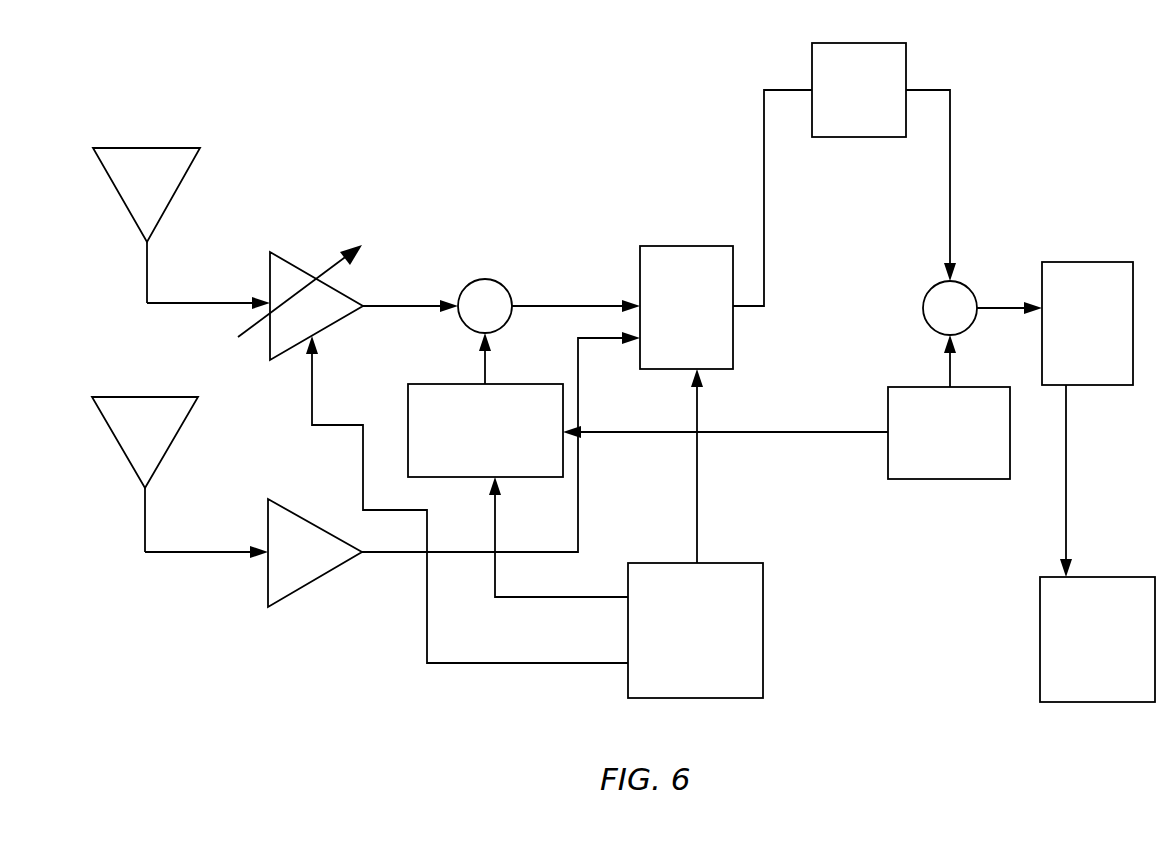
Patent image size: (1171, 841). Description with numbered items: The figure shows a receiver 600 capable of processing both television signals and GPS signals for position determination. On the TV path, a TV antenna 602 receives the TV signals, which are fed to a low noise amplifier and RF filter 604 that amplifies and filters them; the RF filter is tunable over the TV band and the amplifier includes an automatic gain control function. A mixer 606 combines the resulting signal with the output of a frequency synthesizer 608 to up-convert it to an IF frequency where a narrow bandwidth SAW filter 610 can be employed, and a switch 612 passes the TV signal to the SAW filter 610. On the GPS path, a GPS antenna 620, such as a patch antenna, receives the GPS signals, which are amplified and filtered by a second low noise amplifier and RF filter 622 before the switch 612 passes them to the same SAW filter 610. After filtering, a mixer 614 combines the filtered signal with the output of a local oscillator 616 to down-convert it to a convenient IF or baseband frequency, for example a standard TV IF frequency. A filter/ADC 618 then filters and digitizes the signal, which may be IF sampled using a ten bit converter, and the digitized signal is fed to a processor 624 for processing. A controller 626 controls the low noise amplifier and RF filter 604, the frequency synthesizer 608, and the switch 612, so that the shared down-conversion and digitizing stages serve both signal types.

The receiver 600 is at (596, 46).
The TV antenna 602 is at (117, 190).
The low noise amplifier and RF filter 604 is at (268, 272).
The mixer 606 is at (488, 280).
The frequency synthesizer 608 is at (408, 394).
The SAW filter 610 is at (863, 137).
The switch 612 is at (680, 246).
The mixer 614 is at (923, 310).
The local oscillator 616 is at (948, 479).
The filter/ADC 618 is at (1085, 260).
The GPS antenna 620 is at (118, 443).
The low noise amplifier and RF filter 622 is at (268, 607).
The processor 624 is at (1103, 577).
The controller 626 is at (763, 630).